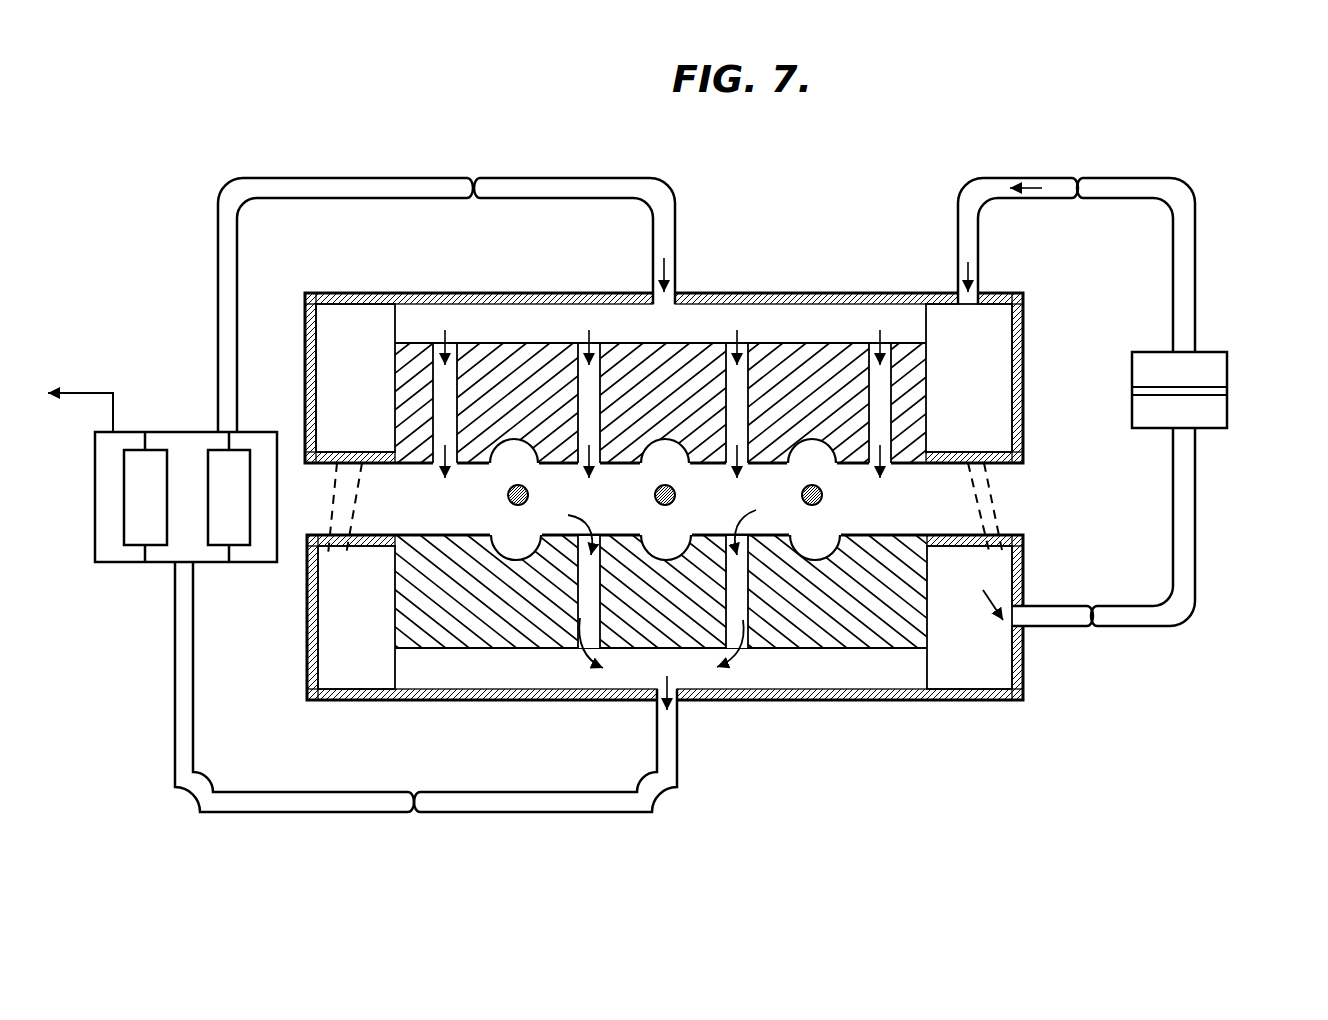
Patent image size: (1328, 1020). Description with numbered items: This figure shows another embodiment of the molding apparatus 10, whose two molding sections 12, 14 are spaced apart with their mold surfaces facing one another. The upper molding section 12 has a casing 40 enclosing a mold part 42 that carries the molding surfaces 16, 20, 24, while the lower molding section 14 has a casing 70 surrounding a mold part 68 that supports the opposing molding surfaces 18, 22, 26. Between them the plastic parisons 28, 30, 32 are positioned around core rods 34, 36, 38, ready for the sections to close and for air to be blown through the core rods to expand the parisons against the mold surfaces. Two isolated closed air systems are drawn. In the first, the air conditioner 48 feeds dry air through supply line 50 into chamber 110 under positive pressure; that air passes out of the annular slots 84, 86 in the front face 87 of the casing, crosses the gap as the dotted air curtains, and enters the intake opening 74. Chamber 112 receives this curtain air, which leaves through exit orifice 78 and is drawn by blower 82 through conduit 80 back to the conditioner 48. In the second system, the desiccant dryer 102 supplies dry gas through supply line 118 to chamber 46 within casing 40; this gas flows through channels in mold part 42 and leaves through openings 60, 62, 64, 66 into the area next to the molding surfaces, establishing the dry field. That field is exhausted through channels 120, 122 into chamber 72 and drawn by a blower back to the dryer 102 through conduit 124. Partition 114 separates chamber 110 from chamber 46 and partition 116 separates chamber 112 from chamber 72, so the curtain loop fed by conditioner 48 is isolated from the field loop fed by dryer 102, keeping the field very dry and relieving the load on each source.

The molding apparatus 10 is at (310, 272).
The molding section 12 is at (297, 368).
The molding section 14 is at (297, 666).
The molding surface 16 is at (502, 462).
The molding surface 18 is at (518, 550).
The mold surface 20 is at (664, 464).
The mold surface 22 is at (668, 550).
The mold surface 24 is at (812, 450).
The mold surface 26 is at (817, 550).
The plastic parison 28 is at (507, 496).
The plastic parison 30 is at (654, 496).
The plastic parison 32 is at (802, 496).
The core rod 34 is at (529, 496).
The core rod 36 is at (675, 500).
The core rod 38 is at (823, 496).
The casing 40 is at (745, 300).
The mold part 42 is at (815, 343).
The hollow chamber 46 is at (548, 303).
The air conditioner 48 is at (1230, 370).
The supply line 50 is at (1097, 186).
The opening 60 is at (440, 470).
The opening 62 is at (602, 468).
The opening 64 is at (740, 470).
The opening 66 is at (886, 474).
The mold part 68 is at (935, 603).
The casing 70 is at (1018, 700).
The hollow chamber 72 is at (853, 702).
The intake opening 74 is at (998, 540).
The exit orifice 78 is at (1035, 607).
The conduit 80 is at (1195, 542).
The blower 82 is at (1225, 408).
The annular slot 84 is at (360, 455).
The annular slot 86 is at (343, 455).
The front face 87 is at (912, 465).
The desiccant dryer 102 is at (100, 520).
The chamber 110 is at (325, 323).
The chamber 112 is at (330, 608).
The partition 114 is at (372, 303).
The partition 116 is at (408, 694).
The supply line 118 is at (537, 190).
The channel 120 is at (575, 650).
The channel 122 is at (757, 650).
The conduit 124 is at (176, 690).